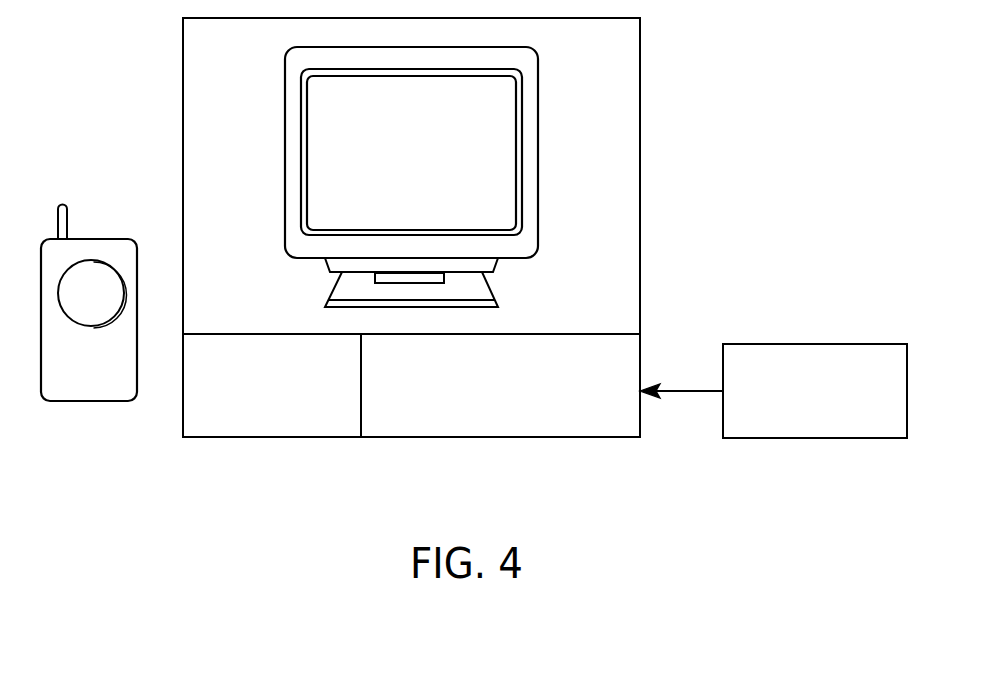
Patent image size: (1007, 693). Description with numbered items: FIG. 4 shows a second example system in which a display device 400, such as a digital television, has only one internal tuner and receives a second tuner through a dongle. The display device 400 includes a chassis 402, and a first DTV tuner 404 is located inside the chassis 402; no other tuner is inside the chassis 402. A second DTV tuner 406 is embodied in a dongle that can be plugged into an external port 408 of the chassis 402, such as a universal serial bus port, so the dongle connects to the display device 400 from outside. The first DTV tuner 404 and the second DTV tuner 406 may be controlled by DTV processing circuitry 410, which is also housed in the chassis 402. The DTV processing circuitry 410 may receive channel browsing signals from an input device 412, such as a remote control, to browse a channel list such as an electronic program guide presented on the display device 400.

The display device 400 is at (538, 152).
The chassis 402 is at (640, 230).
The first DTV tuner 404 is at (272, 437).
The second DTV tuner 406 is at (815, 344).
The external port 408 is at (645, 394).
The DTV processing circuitry 410 is at (500, 437).
The input device 412 is at (87, 401).